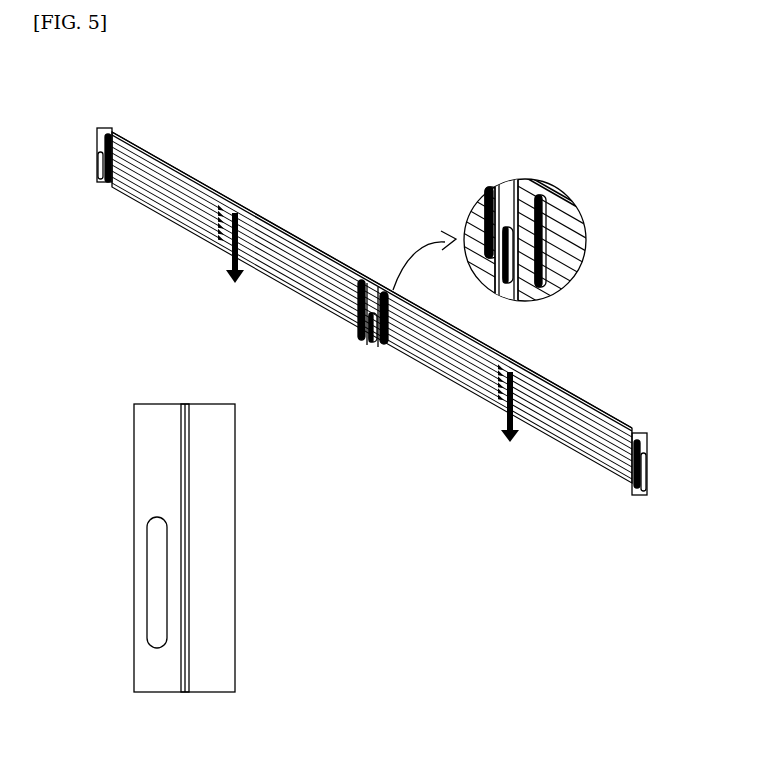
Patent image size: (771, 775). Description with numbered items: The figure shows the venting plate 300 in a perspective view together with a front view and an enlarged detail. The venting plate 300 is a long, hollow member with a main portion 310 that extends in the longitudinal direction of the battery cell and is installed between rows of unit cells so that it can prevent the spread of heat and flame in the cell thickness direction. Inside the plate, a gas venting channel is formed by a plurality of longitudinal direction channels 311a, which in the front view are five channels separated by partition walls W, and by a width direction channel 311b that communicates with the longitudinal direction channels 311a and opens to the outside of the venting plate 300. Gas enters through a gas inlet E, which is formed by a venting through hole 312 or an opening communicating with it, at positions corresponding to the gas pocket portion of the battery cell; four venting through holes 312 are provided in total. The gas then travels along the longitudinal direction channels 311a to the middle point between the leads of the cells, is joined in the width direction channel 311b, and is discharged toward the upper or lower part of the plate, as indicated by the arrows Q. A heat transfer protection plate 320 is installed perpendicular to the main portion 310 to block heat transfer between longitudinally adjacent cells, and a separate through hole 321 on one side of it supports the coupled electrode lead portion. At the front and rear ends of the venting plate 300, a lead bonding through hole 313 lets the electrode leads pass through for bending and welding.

The venting plate 300 is at (661, 127).
The main portion 310 is at (560, 190).
The longitudinal direction channel 311a is at (194, 192).
The width direction channel 311b is at (227, 253).
The venting through hole 312 is at (108, 132).
The lead bonding through hole 313 is at (98, 158).
The heat transfer protection plate 320 is at (513, 180).
The separate through hole 321 is at (370, 342).
The partition wall W is at (167, 165).
The direction Q is at (243, 284).
The gas inlet E is at (630, 493).